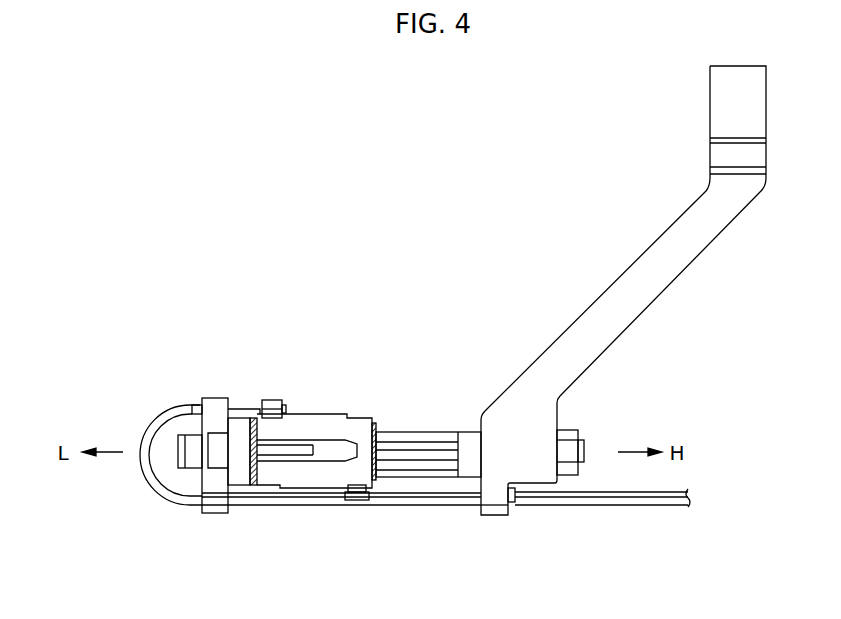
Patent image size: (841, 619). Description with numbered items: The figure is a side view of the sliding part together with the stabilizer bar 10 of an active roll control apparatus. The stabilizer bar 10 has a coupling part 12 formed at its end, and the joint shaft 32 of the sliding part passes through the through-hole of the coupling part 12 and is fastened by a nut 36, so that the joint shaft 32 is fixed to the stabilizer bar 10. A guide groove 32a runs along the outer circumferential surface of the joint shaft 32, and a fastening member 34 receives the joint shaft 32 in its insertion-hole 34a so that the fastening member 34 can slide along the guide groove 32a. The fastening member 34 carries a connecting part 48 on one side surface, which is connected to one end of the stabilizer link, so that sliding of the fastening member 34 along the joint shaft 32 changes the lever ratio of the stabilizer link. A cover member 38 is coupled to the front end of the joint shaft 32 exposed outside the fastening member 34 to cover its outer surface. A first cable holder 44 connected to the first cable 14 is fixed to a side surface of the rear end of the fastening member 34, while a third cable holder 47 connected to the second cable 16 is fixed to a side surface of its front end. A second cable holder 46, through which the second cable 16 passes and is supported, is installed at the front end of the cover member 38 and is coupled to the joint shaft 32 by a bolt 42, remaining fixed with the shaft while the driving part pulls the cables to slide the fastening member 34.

The stabilizer bar 10 is at (618, 273).
The coupling part 12 is at (522, 440).
The first cable 14 is at (601, 506).
The second cable 16 is at (440, 506).
The joint shaft 32 is at (465, 430).
The guide groove 32a is at (413, 445).
The fastening member 34 is at (337, 427).
The insertion-hole 34a is at (380, 428).
The nut 36 is at (578, 432).
The cover member 38 is at (247, 410).
The bolt 42 is at (177, 462).
The first cable holder 44 is at (355, 500).
The second cable holder 46 is at (210, 398).
The third cable holder 47 is at (275, 402).
The connecting part 48 is at (297, 455).